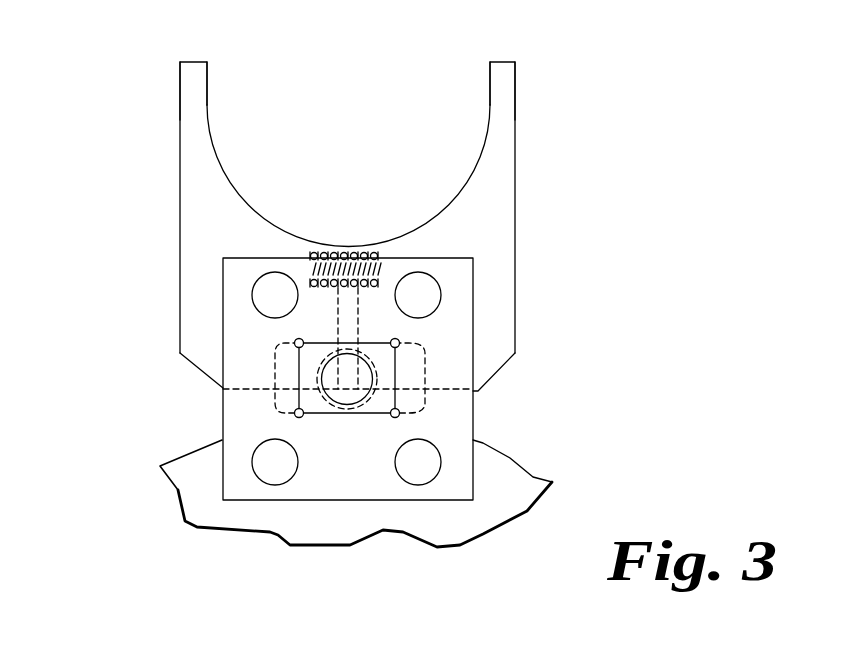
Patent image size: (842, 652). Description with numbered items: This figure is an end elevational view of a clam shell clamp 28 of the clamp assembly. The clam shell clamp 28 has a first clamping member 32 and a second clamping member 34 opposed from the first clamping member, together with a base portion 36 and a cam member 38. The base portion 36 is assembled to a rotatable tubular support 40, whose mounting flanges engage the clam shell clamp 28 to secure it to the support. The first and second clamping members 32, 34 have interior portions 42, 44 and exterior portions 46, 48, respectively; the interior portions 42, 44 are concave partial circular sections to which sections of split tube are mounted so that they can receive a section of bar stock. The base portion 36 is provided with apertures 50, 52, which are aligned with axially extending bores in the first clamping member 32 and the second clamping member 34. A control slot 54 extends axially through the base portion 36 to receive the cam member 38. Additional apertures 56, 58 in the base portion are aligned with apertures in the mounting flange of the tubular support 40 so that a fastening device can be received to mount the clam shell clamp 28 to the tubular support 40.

The clam shell clamp 28 is at (127, 180).
The first clamping member 32 is at (173, 224).
The second clamping member 34 is at (519, 186).
The base portion 36 is at (221, 407).
The cam member 38 is at (382, 414).
The rotatable tubular support 40 is at (527, 478).
The interior portion of first clamping member 42 is at (207, 84).
The interior portion of second clamping member 44 is at (490, 84).
The exterior portion of first clamping member 46 is at (178, 85).
The exterior portion of second clamping member 48 is at (517, 81).
The aperture 50 is at (252, 297).
The aperture 52 is at (441, 298).
The control slot 54 is at (373, 343).
The aperture 56 is at (258, 478).
The aperture 58 is at (417, 485).